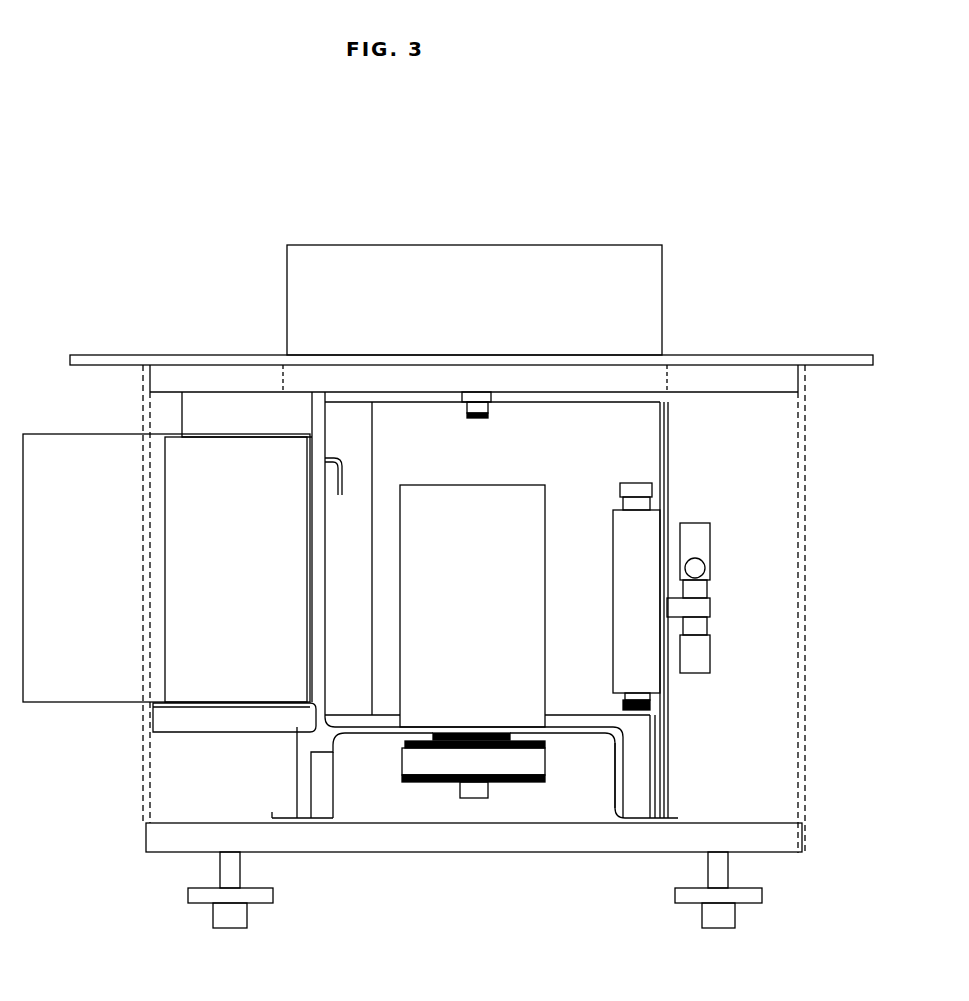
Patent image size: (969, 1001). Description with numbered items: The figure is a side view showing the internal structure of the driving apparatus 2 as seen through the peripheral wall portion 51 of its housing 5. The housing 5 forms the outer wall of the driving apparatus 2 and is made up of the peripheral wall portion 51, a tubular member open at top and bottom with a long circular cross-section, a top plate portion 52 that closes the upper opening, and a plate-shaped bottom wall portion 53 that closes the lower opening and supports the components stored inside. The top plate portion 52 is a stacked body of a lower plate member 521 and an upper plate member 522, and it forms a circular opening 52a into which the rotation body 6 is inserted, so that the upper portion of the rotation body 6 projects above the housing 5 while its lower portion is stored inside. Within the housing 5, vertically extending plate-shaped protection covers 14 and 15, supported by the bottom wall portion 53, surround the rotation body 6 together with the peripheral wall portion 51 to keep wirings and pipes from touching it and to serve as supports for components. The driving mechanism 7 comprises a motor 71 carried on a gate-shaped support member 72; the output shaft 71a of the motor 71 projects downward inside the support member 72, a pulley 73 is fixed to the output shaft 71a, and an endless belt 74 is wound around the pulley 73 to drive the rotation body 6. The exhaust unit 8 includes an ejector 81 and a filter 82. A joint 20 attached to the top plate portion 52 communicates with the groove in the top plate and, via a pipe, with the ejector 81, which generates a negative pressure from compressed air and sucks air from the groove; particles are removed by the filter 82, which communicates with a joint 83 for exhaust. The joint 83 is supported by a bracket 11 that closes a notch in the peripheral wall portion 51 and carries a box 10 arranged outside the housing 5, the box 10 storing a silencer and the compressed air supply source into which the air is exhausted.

The driving apparatus 2 is at (148, 183).
The housing 5 is at (163, 883).
The rotation body 6 is at (428, 245).
The driving mechanism 7 is at (383, 803).
The exhaust unit 8 is at (747, 573).
The box 10 is at (78, 434).
The bracket 11 is at (327, 604).
The protection cover 14 is at (563, 400).
The protection cover 15 is at (668, 434).
The joint 20 is at (472, 420).
The peripheral wall portion 51 is at (143, 785).
The top plate portion 52 is at (788, 346).
The opening 52a is at (282, 380).
The bottom wall portion 53 is at (778, 853).
The motor 71 is at (538, 485).
The output shaft 71a is at (470, 800).
The support member 72 is at (628, 825).
The pulley 73 is at (520, 783).
The belt 74 is at (422, 765).
The ejector 81 is at (710, 533).
The filter 82 is at (613, 583).
The joint 83 is at (333, 460).
The plate member 521 is at (200, 378).
The plate member 522 is at (108, 355).